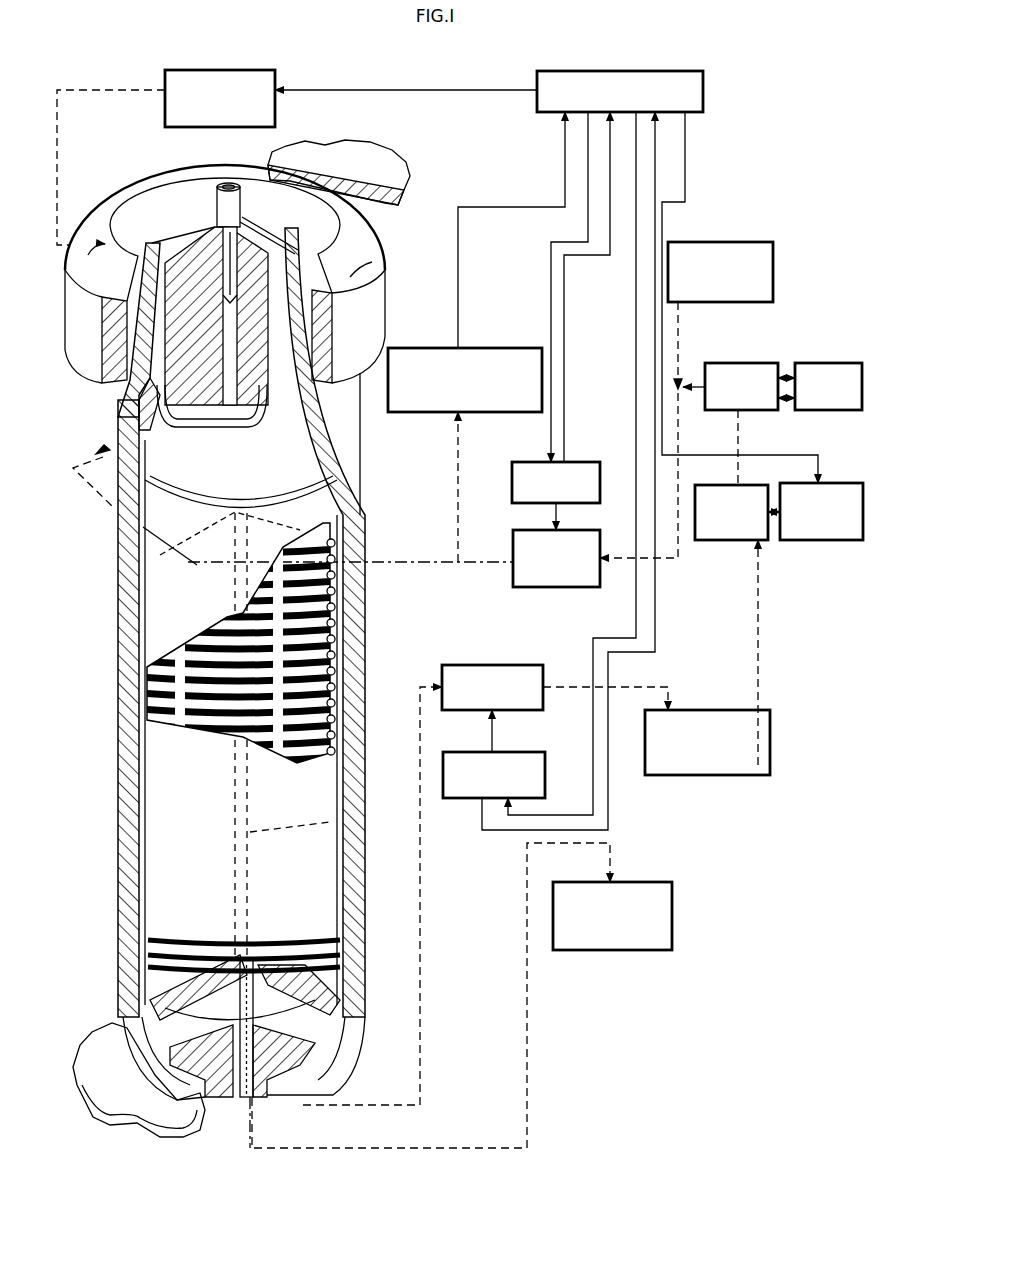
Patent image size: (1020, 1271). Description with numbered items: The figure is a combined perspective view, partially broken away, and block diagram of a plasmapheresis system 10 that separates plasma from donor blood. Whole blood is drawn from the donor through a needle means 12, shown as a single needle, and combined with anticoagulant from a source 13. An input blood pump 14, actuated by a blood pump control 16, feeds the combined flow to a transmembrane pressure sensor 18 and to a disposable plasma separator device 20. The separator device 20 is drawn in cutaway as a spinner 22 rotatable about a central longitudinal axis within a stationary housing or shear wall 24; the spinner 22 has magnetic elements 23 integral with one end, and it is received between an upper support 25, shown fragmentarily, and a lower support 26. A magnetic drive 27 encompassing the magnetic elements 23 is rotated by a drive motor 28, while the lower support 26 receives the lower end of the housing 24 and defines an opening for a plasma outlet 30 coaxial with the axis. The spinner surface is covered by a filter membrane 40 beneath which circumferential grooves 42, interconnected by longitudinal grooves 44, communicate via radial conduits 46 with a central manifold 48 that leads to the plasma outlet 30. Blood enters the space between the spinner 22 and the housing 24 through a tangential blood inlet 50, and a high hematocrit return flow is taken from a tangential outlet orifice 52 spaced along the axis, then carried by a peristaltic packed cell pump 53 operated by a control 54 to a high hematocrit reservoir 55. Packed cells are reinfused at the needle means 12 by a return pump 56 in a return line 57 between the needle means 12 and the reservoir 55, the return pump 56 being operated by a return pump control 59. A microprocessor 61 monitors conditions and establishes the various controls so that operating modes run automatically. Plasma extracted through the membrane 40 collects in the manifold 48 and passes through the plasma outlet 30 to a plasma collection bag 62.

The plasmapheresis system 10 is at (742, 165).
The needle means 12 is at (750, 363).
The anticoagulant source 13 is at (746, 242).
The input blood pump 14 is at (574, 530).
The blood pump control 16 is at (576, 462).
The transmembrane pressure sensor 18 is at (506, 348).
The plasma separator device 20 is at (100, 626).
The spinner 22 is at (340, 708).
The magnetic elements 23 is at (120, 395).
The stationary housing 24 is at (358, 640).
The upper support 25 is at (345, 180).
The lower support 26 is at (95, 1055).
The magnetic drive 27 is at (358, 432).
The drive motor 28 is at (244, 70).
The plasma outlet 30 is at (276, 1090).
The filter membrane 40 is at (300, 862).
The circumferential grooves 42 is at (300, 622).
The longitudinal grooves 44 is at (335, 686).
The radial conduits 46 is at (345, 528).
The central manifold 48 is at (345, 826).
The tangential blood inlet 50 is at (93, 471).
The tangential outlet orifice 52 is at (350, 1002).
The packed cell pump 53 is at (508, 665).
The packed cell pump control 54 is at (516, 752).
The high hematocrit reservoir 55 is at (718, 710).
The return pump 56 is at (714, 485).
The return line 57 is at (740, 446).
The return pump control 59 is at (826, 483).
The microprocessor 61 is at (660, 71).
The plasma collection bag 62 is at (644, 882).